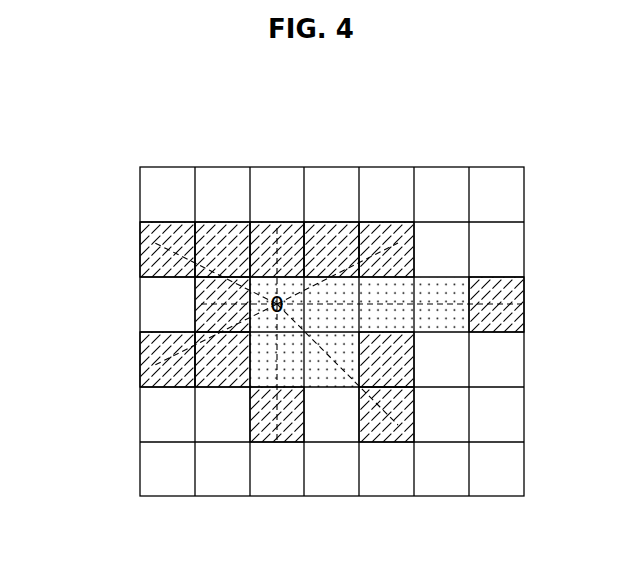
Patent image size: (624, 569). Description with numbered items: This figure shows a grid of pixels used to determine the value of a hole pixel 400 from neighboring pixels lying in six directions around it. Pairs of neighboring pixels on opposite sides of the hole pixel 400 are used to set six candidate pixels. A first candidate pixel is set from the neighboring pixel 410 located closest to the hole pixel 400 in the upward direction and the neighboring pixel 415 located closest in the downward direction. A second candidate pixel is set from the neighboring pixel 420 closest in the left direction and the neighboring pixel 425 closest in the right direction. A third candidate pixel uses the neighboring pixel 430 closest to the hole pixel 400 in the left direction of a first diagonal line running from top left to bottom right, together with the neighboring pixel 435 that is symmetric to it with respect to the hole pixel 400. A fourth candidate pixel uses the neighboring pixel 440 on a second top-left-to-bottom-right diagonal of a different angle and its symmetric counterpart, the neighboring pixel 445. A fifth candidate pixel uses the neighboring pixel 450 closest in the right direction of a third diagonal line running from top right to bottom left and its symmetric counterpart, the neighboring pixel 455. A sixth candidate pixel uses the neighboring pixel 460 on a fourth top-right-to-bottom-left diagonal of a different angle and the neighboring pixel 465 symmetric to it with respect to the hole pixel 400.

The hole pixel 400 is at (290, 303).
The neighboring pixel 2 410 is at (272, 240).
The neighboring pixel 11 415 is at (293, 418).
The neighboring pixel 6 420 is at (232, 298).
The neighboring pixel 7 425 is at (507, 298).
The neighboring pixel 1 430 is at (162, 240).
The neighboring pixel 10 435 is at (405, 357).
The neighboring pixel 2 440 is at (217, 240).
The neighboring pixel 12 445 is at (400, 418).
The neighboring pixel 4 450 is at (327, 240).
The neighboring pixel 9 455 is at (208, 341).
The neighboring pixel 5 460 is at (382, 240).
The neighboring pixel 8 465 is at (158, 364).